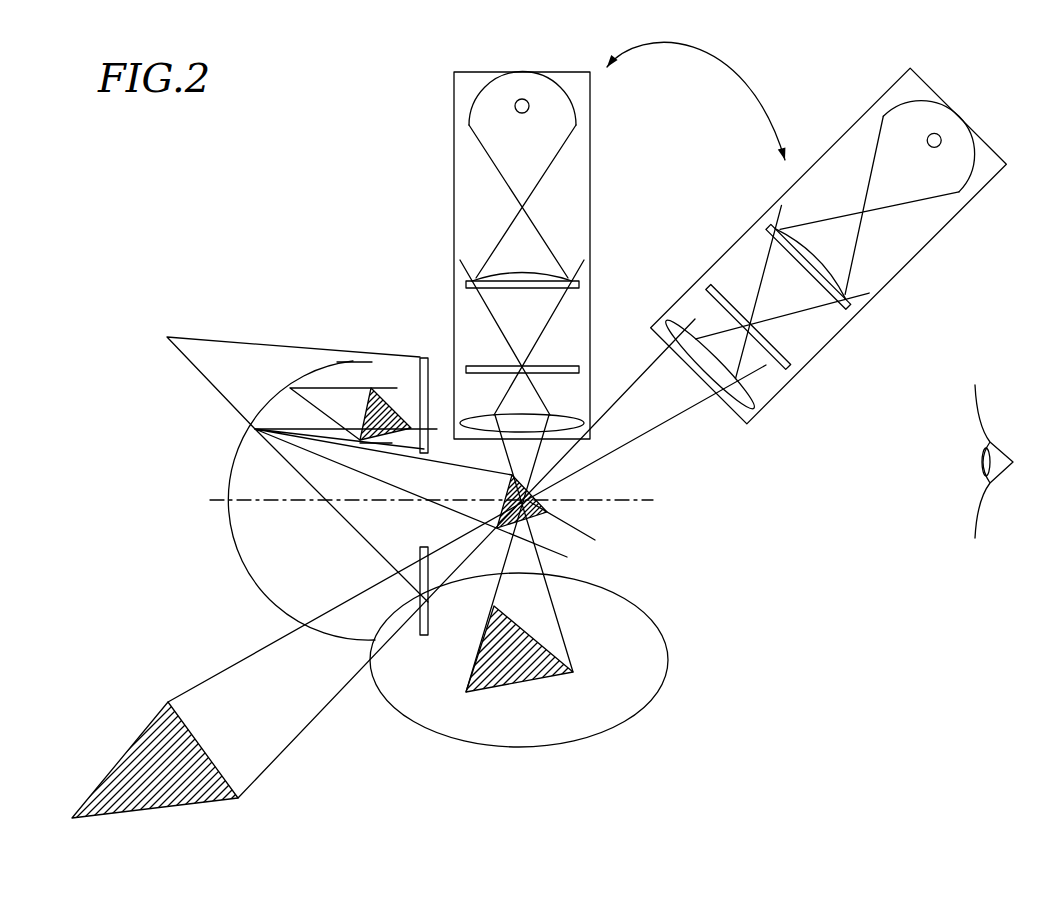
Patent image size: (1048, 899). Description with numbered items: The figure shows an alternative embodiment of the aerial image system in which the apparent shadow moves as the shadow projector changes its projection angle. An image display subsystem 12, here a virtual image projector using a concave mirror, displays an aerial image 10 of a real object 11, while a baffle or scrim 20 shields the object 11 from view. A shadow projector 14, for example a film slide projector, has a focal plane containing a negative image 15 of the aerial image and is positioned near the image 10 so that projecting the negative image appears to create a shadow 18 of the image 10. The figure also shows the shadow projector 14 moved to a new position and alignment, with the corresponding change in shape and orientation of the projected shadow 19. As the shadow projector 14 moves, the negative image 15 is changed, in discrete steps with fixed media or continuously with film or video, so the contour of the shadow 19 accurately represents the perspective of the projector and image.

The aerial image 10 is at (549, 513).
The real object 11 is at (370, 387).
The image display subsystem 12 is at (252, 575).
The shadow projector 14 is at (712, 239).
The negative image 15 is at (579, 369).
The shadow 18 is at (540, 644).
The projected shadow 19 is at (130, 746).
The baffle or scrim 20 is at (167, 337).